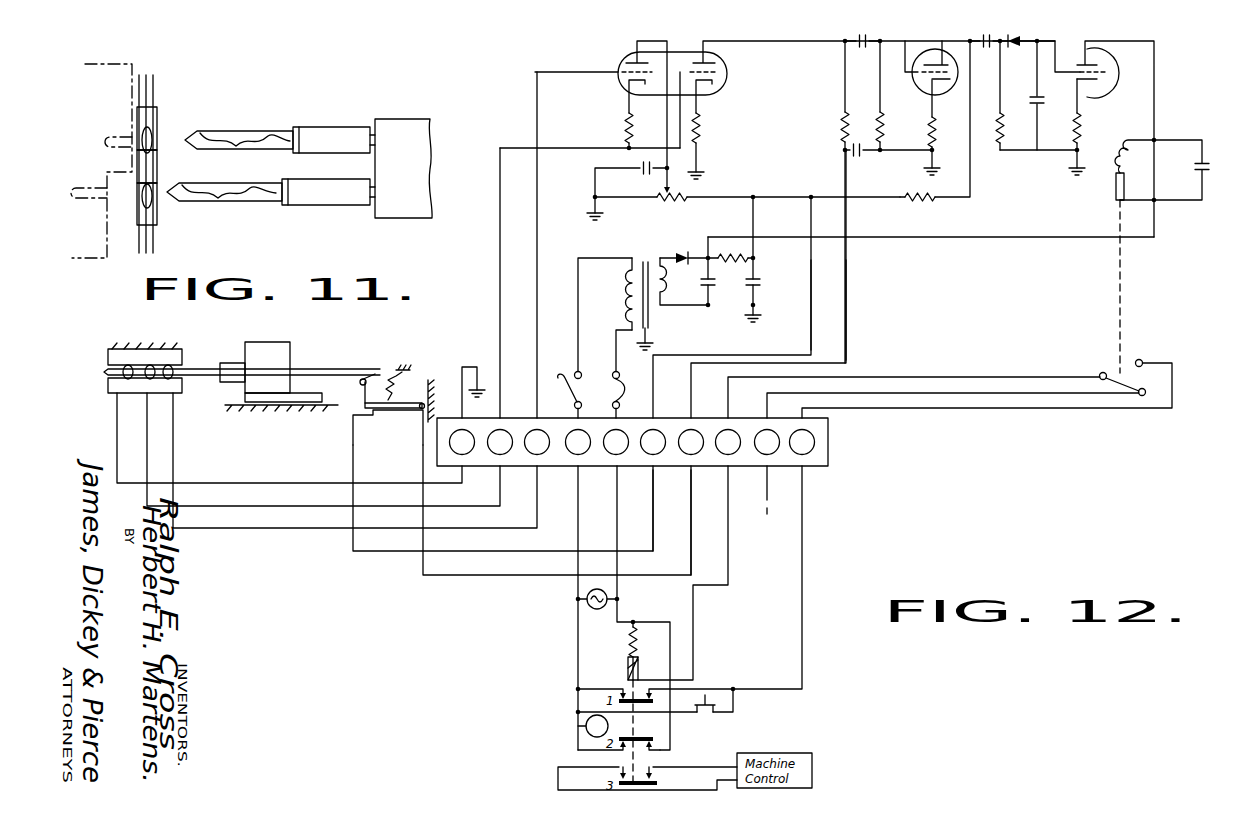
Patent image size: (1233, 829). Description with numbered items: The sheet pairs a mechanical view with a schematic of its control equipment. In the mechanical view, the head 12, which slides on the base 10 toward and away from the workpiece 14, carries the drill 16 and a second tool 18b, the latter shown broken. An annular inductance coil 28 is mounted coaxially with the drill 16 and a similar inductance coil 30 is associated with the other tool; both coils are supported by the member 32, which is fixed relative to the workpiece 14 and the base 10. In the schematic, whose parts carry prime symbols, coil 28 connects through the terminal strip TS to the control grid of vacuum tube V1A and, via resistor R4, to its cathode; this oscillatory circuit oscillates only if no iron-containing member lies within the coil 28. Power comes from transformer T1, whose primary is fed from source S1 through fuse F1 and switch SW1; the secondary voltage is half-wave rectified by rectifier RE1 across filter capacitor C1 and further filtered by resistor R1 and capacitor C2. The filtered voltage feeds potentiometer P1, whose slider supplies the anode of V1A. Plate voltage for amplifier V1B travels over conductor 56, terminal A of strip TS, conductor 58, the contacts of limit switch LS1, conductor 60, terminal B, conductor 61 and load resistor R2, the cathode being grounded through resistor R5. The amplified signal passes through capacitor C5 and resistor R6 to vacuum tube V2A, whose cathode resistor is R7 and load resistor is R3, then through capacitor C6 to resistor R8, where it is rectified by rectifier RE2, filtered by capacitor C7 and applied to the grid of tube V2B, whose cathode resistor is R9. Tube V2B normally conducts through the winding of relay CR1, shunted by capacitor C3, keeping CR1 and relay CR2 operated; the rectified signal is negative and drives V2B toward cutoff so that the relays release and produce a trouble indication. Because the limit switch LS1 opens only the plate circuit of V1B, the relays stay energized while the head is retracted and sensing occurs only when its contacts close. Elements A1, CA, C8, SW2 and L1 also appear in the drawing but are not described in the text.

In FIG. 11, the workpiece 14 is at (58, 250).
In FIG. 11, the inductance coil 28 is at (160, 130).
In FIG. 12, the inductance coil 28 is at (152, 362).
In FIG. 11, the member 32 is at (158, 168).
In FIG. 11, the inductance coil 30 is at (157, 200).
In FIG. 11, the drill 16 is at (282, 135).
In FIG. 12, the drill 16 is at (200, 366).
In FIG. 11, the tool 18b is at (258, 197).
In FIG. 11, the head 12 is at (436, 148).
In FIG. 12, the head 12 is at (280, 346).
In FIG. 12, the base 10 is at (270, 407).
In FIG. 12, the actuator arm A1 is at (386, 372).
In FIG. 12, the limit switch LS1 is at (392, 414).
In FIG. 12, the terminal strip TS is at (829, 445).
In FIG. 12, the switch SW1 is at (588, 338).
In FIG. 12, the fuse F1 is at (620, 380).
In FIG. 12, the transformer T1 is at (641, 250).
In FIG. 12, the rectifier RE1 is at (682, 254).
In FIG. 12, the resistor R1 is at (730, 276).
In FIG. 12, the filter capacitor C1 is at (704, 283).
In FIG. 12, the capacitor C2 is at (762, 283).
In FIG. 12, the vacuum tube V1A is at (618, 56).
In FIG. 12, the vacuum tube V1B is at (727, 60).
In FIG. 12, the resistor R4 is at (624, 126).
In FIG. 12, the resistor R5 is at (700, 128).
In FIG. 12, the capacitor CA' CA is at (640, 175).
In FIG. 12, the potentiometer P1 is at (672, 203).
In FIG. 12, the capacitor C5 is at (862, 40).
In FIG. 12, the load resistor R2 is at (843, 126).
In FIG. 12, the capacitor C8' C8 is at (858, 156).
In FIG. 12, the resistor R6 is at (884, 124).
In FIG. 12, the resistor R7 is at (936, 130).
In FIG. 12, the vacuum tube V2A is at (928, 50).
In FIG. 12, the load resistor R3 is at (905, 210).
In FIG. 12, the capacitor C6 is at (982, 40).
In FIG. 12, the rectifier RE2 is at (1018, 40).
In FIG. 12, the resistor R8 is at (996, 136).
In FIG. 12, the capacitor C7 is at (1043, 108).
In FIG. 12, the resistor R9 is at (1082, 128).
In FIG. 12, the vacuum tube V2B is at (1108, 50).
In FIG. 12, the capacitor C3 is at (1195, 180).
In FIG. 12, the control relay CR1 is at (1114, 190).
In FIG. 12, the conductor 56 is at (811, 297).
In FIG. 12, the conductor 61 is at (846, 328).
In FIG. 12, the conductor 58 is at (653, 522).
In FIG. 12, the conductor 60 is at (490, 575).
In FIG. 12, the source S1 is at (588, 595).
In FIG. 12, the relay CR2 is at (628, 655).
In FIG. 12, the reset switch SW2' SW2 is at (716, 705).
In FIG. 12, the indicator lamp L1' L1 is at (586, 726).